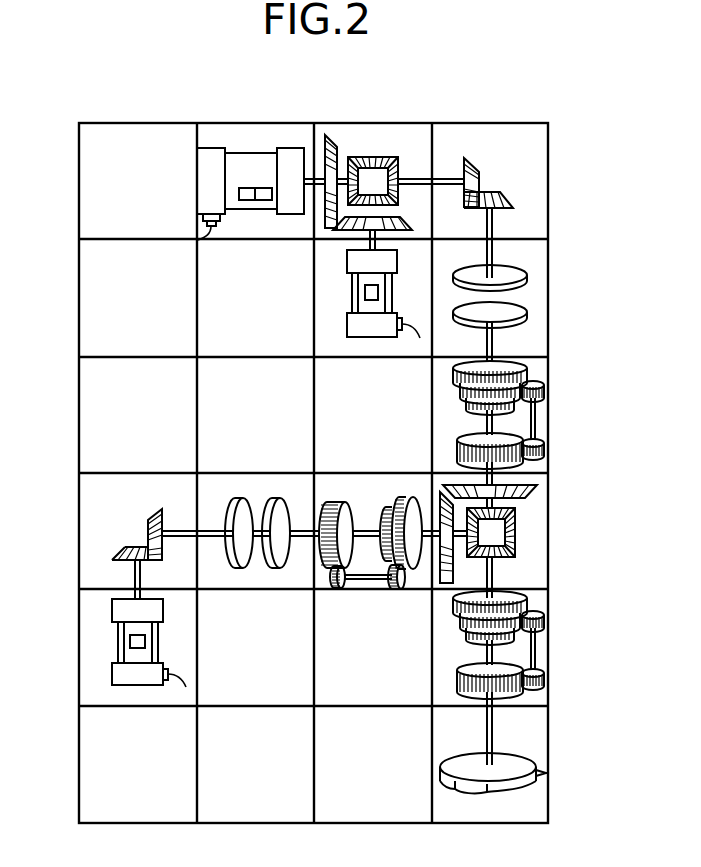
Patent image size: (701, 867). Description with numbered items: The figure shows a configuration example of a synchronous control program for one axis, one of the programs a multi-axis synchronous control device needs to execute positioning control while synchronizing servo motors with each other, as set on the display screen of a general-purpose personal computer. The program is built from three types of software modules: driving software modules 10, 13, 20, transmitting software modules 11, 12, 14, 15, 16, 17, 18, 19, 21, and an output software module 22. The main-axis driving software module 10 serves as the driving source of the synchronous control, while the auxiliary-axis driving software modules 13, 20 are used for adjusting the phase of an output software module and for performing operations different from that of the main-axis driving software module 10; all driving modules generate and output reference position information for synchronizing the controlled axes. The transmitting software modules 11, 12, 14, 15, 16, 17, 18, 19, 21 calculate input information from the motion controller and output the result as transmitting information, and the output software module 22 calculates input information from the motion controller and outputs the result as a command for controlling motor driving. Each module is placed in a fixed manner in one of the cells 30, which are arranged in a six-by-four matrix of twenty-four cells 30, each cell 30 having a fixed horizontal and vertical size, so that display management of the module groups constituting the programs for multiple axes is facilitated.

The main-axis driving software module 10 is at (255, 128).
The transmitting software module 11 is at (376, 128).
The transmitting software module 12 is at (486, 128).
The auxiliary-axis driving software module 13 is at (326, 302).
The transmitting software module 14 is at (538, 296).
The transmitting software module 15 is at (538, 367).
The transmitting software module 16 is at (137, 485).
The transmitting software module 17 is at (259, 485).
The transmitting software module 18 is at (379, 485).
The transmitting software module 19 is at (538, 532).
The auxiliary-axis driving software module 20 is at (90, 643).
The transmitting software module 21 is at (538, 644).
The output software module 22 is at (538, 742).
The cell 30 is at (117, 128).